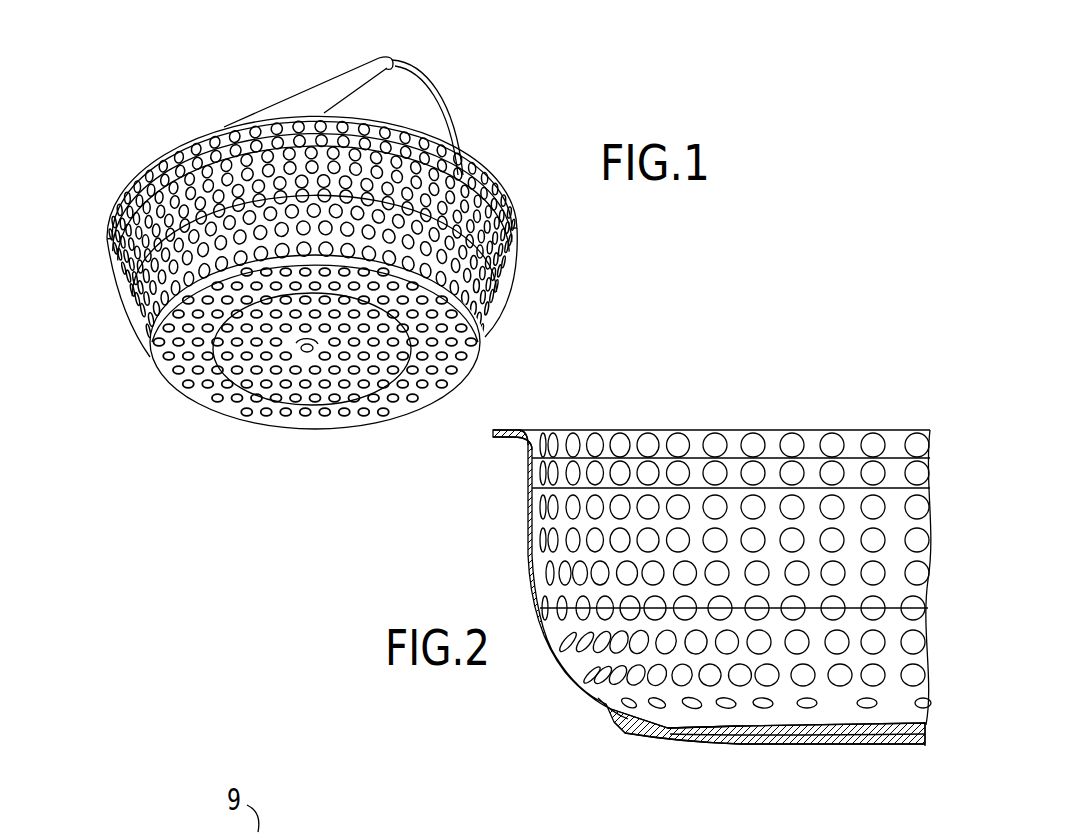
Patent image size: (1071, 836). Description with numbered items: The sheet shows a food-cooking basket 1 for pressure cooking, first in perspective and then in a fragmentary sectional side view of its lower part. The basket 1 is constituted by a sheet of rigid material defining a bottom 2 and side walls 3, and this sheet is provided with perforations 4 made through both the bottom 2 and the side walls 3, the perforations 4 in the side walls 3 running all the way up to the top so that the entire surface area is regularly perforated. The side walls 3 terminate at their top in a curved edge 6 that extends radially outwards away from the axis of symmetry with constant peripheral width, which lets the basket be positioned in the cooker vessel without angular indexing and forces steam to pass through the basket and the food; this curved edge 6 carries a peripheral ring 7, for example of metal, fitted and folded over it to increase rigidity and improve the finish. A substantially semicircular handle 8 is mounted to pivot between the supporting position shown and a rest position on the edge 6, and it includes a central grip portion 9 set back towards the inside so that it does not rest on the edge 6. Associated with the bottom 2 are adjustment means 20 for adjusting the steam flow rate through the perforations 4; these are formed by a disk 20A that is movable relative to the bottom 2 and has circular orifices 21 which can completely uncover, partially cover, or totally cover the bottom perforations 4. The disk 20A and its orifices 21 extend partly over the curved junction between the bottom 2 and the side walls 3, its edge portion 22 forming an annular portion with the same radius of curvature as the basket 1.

In FIG. 1, the food-cooking basket 1 is at (214, 106).
In FIG. 2, the food-cooking basket 1 is at (857, 410).
In FIG. 2, the bottom 2 is at (900, 712).
In FIG. 1, the side walls 3 is at (150, 247).
In FIG. 2, the side walls 3 is at (527, 542).
In FIG. 1, the perforations 4 is at (235, 215).
In FIG. 2, the perforations 4 is at (753, 503).
In FIG. 1, the curved edge 6 is at (128, 192).
In FIG. 2, the curved edge 6 is at (500, 436).
In FIG. 1, the peripheral ring 7 is at (499, 183).
In FIG. 1, the handle 8 is at (434, 90).
In FIG. 1, the grip portion 9 is at (344, 92).
In FIG. 1, the adjustment means 20 is at (155, 362).
In FIG. 2, the adjustment means 20 is at (728, 746).
In FIG. 2, the disk 20A is at (857, 732).
In FIG. 1, the orifices 21 is at (258, 357).
In FIG. 2, the orifices 21 is at (687, 735).
In FIG. 1, the edge portion 22 is at (447, 337).
In FIG. 2, the edge portion 22 is at (633, 730).